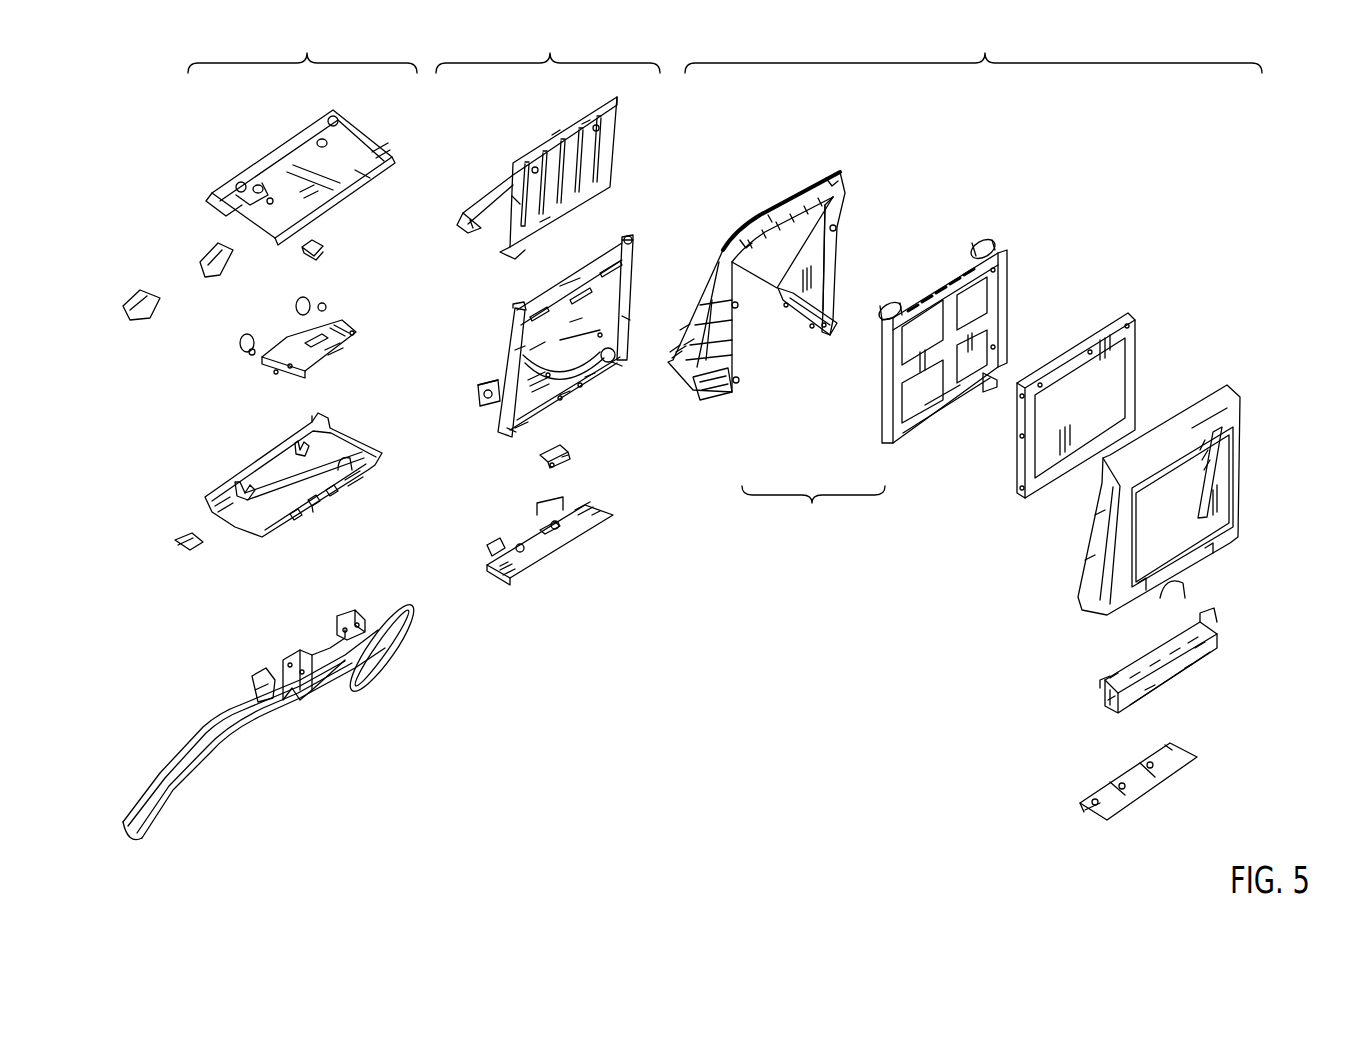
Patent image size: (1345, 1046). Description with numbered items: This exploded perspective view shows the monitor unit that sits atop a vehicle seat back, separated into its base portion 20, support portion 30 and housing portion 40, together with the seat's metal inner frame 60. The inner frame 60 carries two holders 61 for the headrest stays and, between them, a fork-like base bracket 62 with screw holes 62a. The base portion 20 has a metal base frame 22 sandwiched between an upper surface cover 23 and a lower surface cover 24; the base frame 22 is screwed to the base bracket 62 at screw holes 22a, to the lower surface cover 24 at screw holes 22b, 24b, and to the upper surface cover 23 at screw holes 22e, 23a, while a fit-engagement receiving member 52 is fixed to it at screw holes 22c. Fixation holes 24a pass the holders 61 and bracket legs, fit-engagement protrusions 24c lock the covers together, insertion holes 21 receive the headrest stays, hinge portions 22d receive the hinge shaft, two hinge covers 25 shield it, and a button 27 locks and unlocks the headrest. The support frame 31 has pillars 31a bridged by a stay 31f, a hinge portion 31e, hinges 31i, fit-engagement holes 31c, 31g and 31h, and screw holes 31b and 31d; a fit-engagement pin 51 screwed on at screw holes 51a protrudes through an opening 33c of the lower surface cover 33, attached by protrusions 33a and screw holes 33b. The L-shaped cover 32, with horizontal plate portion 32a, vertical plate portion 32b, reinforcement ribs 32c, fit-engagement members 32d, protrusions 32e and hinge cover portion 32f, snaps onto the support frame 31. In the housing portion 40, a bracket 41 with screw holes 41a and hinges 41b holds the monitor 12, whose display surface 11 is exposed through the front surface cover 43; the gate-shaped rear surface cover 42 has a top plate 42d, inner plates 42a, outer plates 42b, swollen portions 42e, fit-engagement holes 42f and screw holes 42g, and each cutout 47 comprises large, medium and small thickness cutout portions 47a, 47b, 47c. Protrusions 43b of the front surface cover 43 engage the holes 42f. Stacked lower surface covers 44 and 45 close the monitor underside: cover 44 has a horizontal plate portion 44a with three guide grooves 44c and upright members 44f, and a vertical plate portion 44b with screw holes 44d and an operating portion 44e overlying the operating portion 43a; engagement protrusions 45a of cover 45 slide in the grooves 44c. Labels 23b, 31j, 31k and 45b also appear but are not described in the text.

The display surface 11 is at (1040, 468).
The monitor 12 is at (1054, 381).
The base portion 20 is at (302, 45).
The insertion holes 21 is at (343, 140).
The base frame 22 is at (354, 326).
The screw holes 22a is at (355, 333).
The screw holes 22b is at (335, 352).
The screw holes 22c is at (305, 340).
The hinge portions 22d is at (298, 303).
The screw holes 22e is at (325, 305).
The upper surface cover 23 is at (365, 150).
The screw holes 23a is at (322, 140).
The upper case wall 23b is at (355, 170).
The lower surface cover 24 is at (300, 490).
The fixation holes 24a is at (205, 488).
The screw holes 24b is at (310, 510).
The fit-engagement protrusions 24c is at (332, 496).
The hinge covers 25 is at (142, 293).
The button 27 is at (178, 540).
The support portion 30 is at (548, 45).
The support frame 31 is at (622, 250).
The pillars 31a is at (625, 320).
The screw holes 31b is at (565, 398).
The fit-engagement holes 31c is at (620, 360).
The screw holes 31d is at (590, 378).
The hinge portion 31e is at (484, 396).
The stay 31f is at (560, 290).
The fit-engagement holes 31g is at (520, 300).
The fit-engagement holes 31h is at (575, 322).
The hinges 31i is at (632, 240).
The frame projection 31j is at (480, 385).
The frame projection 31k is at (522, 426).
The L-shaped cover 32 is at (620, 106).
The horizontal plate portion 32a is at (515, 200).
The vertical plate portion 32b is at (585, 124).
The reinforcement ribs 32c is at (545, 222).
The fit-engagement members 32d is at (566, 130).
The fit-engagement protrusions 32e is at (532, 168).
The hinge cover portion 32f is at (465, 215).
The lower surface cover 33 is at (553, 578).
The fit-engagement protrusions 33a is at (596, 518).
The screw holes 33b is at (524, 550).
The opening 33c is at (535, 535).
The housing portion 40 is at (973, 45).
The bracket 41 is at (1022, 258).
The screw holes 41a is at (995, 347).
The hinges 41b is at (990, 240).
The rear surface cover 42 is at (796, 182).
The inner plate 42a is at (818, 275).
The outer plate 42b is at (842, 200).
The top plate 42d is at (772, 215).
The swollen portions 42e is at (836, 180).
The fit-engagement holes 42f is at (836, 228).
The screw holes 42g is at (826, 318).
The front surface cover 43 is at (1238, 381).
The operating portion 43a is at (1185, 578).
The fit-engagement protrusions 43b is at (1205, 492).
The lower surface cover 44 is at (1213, 672).
The horizontal plate portion 44a is at (1105, 675).
The vertical plate portion 44b is at (1190, 668).
The guide grooves 44c is at (1118, 670).
The screw holes 44d is at (1200, 650).
The operating portion 44e is at (1150, 690).
The upright members 44f is at (1212, 622).
The lower surface cover 45 is at (1158, 805).
The engagement protrusions 45a is at (1125, 788).
The strip end 45b is at (1084, 808).
The cutout 47 is at (722, 392).
The large thickness cutout portion 47a is at (826, 335).
The medium thickness cutout portion 47b is at (812, 335).
The small thickness cutout portion 47c is at (784, 320).
The fit-engagement pin 51 is at (552, 452).
The screw holes 51a is at (568, 458).
The fit-engagement receiving member 52 is at (322, 246).
The inner frame 60 is at (295, 712).
The holders 61 is at (255, 685).
The base bracket 62 is at (330, 668).
The screw holes 62a is at (350, 618).